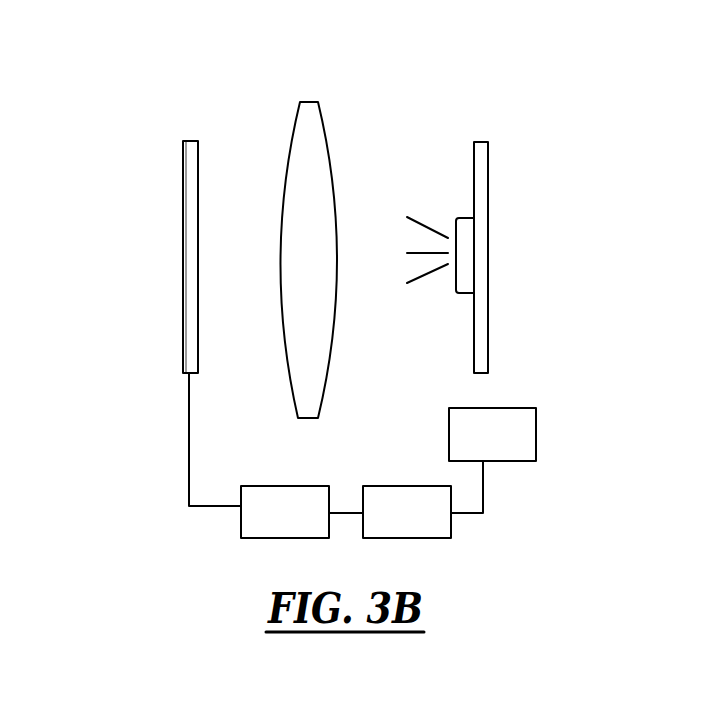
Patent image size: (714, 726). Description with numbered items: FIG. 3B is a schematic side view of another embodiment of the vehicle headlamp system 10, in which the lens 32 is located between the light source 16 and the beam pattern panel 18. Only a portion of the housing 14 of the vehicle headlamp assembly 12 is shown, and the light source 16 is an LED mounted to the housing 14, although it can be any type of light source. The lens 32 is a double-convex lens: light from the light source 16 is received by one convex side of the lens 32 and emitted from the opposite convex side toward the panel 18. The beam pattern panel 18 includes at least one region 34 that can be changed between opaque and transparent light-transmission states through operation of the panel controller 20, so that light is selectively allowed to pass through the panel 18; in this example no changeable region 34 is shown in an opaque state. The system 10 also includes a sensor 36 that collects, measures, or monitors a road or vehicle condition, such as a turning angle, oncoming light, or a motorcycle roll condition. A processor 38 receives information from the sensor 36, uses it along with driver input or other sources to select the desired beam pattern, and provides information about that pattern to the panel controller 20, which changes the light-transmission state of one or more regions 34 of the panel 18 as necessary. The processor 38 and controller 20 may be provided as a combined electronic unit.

The vehicle headlamp system 10 is at (578, 240).
The vehicle headlamp assembly 12 is at (391, 114).
The housing 14 is at (483, 177).
The light source 16 is at (458, 217).
The beam pattern panel 18 is at (183, 168).
The panel controller 20 is at (290, 486).
The lens 32 is at (297, 160).
The region 34 is at (183, 217).
The sensor 36 is at (495, 408).
The processor 38 is at (398, 486).